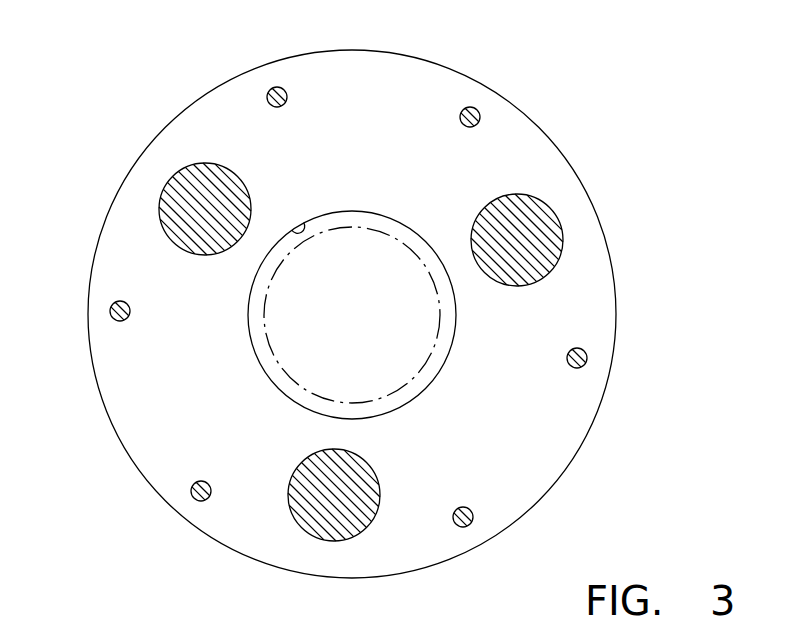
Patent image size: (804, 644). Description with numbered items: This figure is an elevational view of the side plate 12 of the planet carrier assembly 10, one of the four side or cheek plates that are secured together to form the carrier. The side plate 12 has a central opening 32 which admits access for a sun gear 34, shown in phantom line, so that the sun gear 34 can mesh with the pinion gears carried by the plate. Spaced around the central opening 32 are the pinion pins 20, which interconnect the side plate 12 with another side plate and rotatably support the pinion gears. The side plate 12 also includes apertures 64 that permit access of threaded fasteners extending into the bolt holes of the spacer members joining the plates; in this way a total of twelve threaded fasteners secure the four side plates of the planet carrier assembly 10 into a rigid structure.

The planet carrier assembly 10 is at (408, 310).
The side plate 12 is at (598, 293).
The pinion pins 20 is at (190, 192).
The opening 32 is at (303, 223).
The sun gear 34 is at (267, 293).
The apertures 64 is at (287, 97).